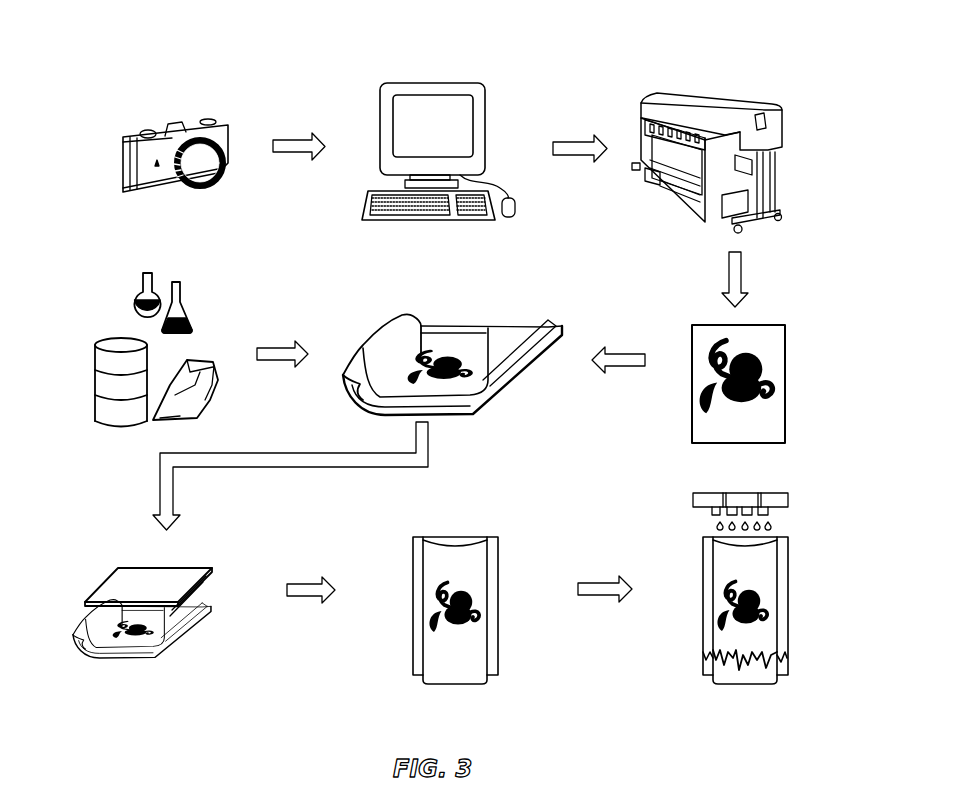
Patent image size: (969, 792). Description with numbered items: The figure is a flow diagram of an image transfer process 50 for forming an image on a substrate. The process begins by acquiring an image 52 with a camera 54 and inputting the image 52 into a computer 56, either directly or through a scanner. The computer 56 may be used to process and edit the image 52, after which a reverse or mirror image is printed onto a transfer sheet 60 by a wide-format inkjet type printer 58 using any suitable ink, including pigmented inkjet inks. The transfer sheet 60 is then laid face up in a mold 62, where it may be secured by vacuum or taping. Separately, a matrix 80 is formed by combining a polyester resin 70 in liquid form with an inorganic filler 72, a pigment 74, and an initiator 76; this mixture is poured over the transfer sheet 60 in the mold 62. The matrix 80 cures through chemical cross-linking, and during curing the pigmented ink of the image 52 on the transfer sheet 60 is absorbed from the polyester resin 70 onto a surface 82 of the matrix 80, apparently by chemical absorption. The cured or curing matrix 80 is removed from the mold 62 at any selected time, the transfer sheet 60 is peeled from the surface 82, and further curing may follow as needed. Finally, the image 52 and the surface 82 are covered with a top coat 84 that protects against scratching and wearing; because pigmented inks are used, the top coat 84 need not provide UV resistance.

The image transfer process 50 is at (115, 60).
The image 52 is at (758, 377).
The camera 54 is at (126, 170).
The computer 56 is at (489, 94).
The wide-format inkjet type printer 58 is at (733, 112).
The transfer sheet 60 is at (768, 325).
The mold 62 is at (473, 405).
The polyester resin 70 is at (102, 358).
The inorganic filler 72 is at (208, 397).
The pigment 74 is at (185, 312).
The initiator 76 is at (140, 285).
The matrix 80 is at (118, 572).
The surface 82 is at (487, 588).
The top coat 84 is at (757, 638).